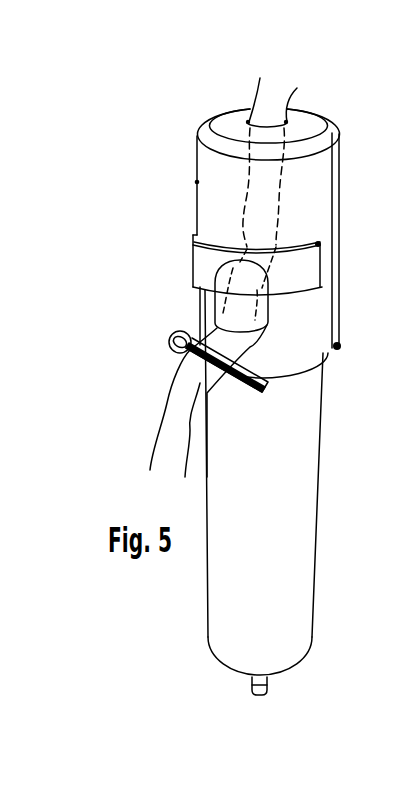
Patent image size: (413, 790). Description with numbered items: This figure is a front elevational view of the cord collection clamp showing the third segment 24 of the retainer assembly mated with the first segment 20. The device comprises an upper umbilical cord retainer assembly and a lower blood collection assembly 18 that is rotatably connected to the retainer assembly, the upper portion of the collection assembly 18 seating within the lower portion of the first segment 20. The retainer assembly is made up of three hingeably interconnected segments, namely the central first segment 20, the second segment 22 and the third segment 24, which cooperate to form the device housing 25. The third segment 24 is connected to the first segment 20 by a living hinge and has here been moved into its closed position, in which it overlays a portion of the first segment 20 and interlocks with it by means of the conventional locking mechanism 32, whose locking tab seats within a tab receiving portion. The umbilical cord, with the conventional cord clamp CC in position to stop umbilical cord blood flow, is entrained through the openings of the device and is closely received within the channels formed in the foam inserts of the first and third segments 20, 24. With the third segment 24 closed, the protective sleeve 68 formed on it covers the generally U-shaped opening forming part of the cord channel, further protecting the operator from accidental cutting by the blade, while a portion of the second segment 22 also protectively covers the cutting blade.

The blood collection assembly 18 is at (300, 483).
The first segment 20 is at (238, 108).
The second segment 22 is at (310, 352).
The third segment 24 is at (320, 178).
The device housing 25 is at (175, 323).
The locking mechanism 32 is at (196, 182).
The protective sleeve 68 is at (265, 308).
The cord C is at (281, 97).
The cord clamp CC is at (170, 342).